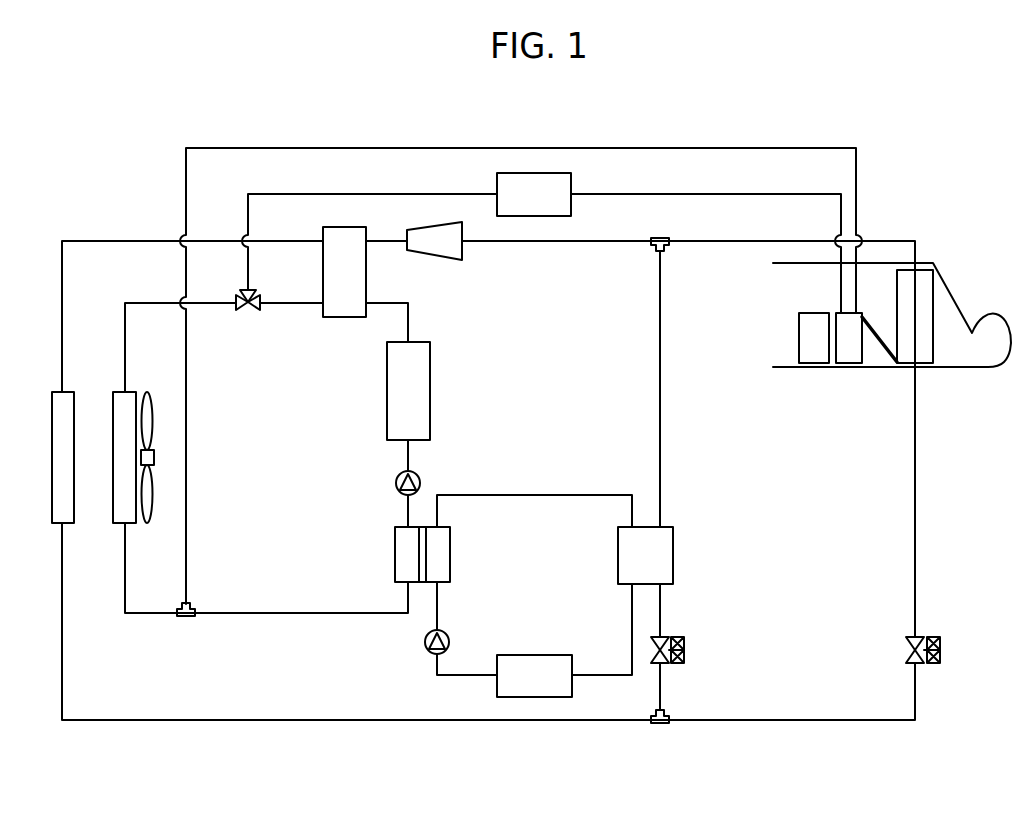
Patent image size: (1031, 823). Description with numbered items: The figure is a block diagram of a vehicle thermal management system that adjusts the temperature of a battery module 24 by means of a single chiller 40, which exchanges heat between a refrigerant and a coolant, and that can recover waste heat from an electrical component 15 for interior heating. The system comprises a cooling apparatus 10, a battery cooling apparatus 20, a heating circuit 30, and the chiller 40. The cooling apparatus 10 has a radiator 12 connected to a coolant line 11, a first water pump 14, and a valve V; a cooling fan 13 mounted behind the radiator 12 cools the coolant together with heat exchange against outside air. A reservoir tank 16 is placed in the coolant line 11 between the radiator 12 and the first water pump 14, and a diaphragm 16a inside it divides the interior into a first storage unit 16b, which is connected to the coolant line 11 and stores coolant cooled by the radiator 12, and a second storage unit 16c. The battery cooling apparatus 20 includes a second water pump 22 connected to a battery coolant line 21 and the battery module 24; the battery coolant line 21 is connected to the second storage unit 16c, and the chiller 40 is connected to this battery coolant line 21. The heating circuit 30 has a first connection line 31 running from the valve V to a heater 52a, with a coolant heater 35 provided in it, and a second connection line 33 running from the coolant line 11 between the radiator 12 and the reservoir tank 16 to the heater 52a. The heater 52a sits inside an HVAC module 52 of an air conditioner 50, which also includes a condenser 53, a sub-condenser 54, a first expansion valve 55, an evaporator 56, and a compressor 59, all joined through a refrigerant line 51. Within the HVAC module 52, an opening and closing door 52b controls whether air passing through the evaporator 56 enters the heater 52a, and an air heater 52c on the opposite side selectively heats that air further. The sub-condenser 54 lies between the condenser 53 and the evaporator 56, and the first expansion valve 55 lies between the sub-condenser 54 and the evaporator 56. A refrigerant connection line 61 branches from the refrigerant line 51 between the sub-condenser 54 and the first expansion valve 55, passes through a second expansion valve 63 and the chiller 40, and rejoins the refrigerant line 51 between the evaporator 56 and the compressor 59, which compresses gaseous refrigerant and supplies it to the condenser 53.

The cooling apparatus 10 is at (139, 622).
The coolant line 11 is at (148, 303).
The valve V is at (246, 312).
The radiator 12 is at (113, 457).
The cooling fan 13 is at (152, 521).
The first water pump 14 is at (396, 483).
The electrical component 15 is at (431, 388).
The reservoir tank 16 is at (416, 567).
The diaphragm 16a is at (423, 582).
The first storage unit 16b is at (395, 530).
The second storage unit 16c is at (451, 556).
The battery cooling apparatus 20 is at (424, 674).
The battery coolant line 21 is at (533, 495).
The second water pump 22 is at (425, 642).
The battery module 24 is at (535, 655).
The heating circuit 30 is at (764, 140).
The first connection line 31 is at (705, 194).
The second connection line 33 is at (520, 147).
The coolant heater 35 is at (572, 210).
The condenser 53 is at (343, 318).
The compressor 59 is at (440, 258).
The air conditioner 50 is at (932, 545).
The refrigerant line 51 is at (120, 241).
The HVAC module 52 is at (892, 329).
The heater 52a is at (849, 364).
The opening and closing door 52b is at (887, 364).
The air heater 52c is at (812, 364).
The evaporator 56 is at (933, 364).
The sub-condenser 54 is at (52, 457).
The first expansion valve 55 is at (942, 650).
The refrigerant connection line 61 is at (662, 387).
The second expansion valve 63 is at (686, 650).
The chiller 40 is at (675, 556).